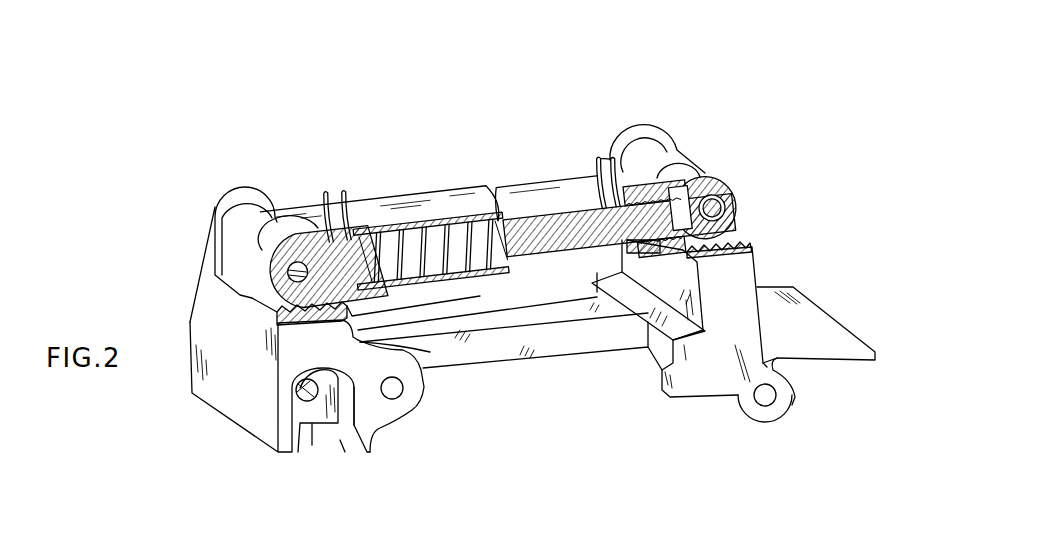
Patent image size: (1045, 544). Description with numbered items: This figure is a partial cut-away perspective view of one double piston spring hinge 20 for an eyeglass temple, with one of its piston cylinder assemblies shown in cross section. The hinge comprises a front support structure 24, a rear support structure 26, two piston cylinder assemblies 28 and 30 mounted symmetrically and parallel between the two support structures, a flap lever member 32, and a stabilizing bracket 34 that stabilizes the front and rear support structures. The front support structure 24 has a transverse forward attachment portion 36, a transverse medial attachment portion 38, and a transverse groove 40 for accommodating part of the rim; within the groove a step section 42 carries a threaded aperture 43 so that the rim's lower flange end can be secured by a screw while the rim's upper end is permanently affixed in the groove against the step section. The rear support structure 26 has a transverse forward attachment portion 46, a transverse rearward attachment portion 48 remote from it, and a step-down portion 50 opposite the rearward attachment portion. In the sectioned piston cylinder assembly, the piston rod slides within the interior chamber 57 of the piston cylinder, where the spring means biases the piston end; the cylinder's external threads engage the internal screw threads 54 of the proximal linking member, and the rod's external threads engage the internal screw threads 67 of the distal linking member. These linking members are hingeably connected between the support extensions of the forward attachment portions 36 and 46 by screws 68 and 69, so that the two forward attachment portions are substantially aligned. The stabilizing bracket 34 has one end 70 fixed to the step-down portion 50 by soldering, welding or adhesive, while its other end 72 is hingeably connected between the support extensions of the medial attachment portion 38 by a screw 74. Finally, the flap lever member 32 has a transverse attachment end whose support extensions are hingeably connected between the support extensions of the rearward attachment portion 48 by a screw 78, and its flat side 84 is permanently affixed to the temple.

The double piston spring hinge 20 is at (508, 75).
The front support structure 24 is at (218, 418).
The rear support structure 26 is at (694, 403).
The piston cylinder assembly 28 is at (411, 192).
The piston cylinder assembly 30 is at (483, 205).
The flap lever member 32 is at (828, 298).
The stabilizing bracket 34 is at (560, 347).
The transverse forward attachment portion 36 is at (225, 276).
The transverse medial attachment portion 38 is at (417, 397).
The transverse groove 40 is at (347, 433).
The step section 42 is at (305, 428).
The threaded aperture 43 is at (317, 412).
The transverse forward attachment portion 46 is at (727, 238).
The transverse rearward attachment portion 48 is at (787, 397).
The step-down portion 50 is at (660, 335).
The internal screw threads 54 is at (353, 197).
The interior chamber 57 is at (455, 278).
The internal screw threads 67 is at (685, 178).
The screw 68 is at (250, 302).
The screw 69 is at (716, 192).
The one end of support bracket 70 is at (605, 318).
The other end of support bracket 72 is at (405, 338).
The screw 74 is at (393, 397).
The screw 78 is at (767, 398).
The flat side 84 is at (837, 332).